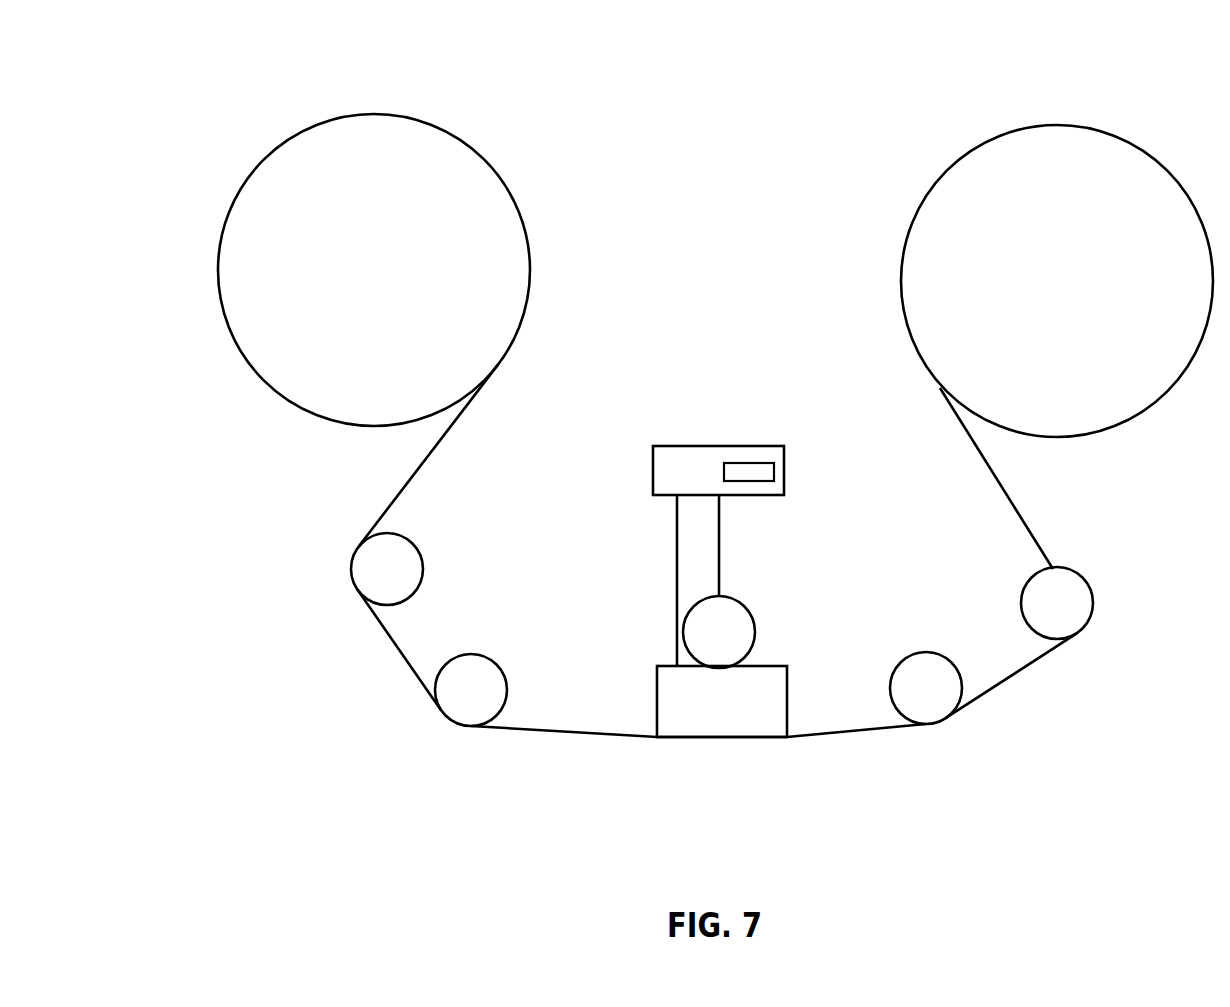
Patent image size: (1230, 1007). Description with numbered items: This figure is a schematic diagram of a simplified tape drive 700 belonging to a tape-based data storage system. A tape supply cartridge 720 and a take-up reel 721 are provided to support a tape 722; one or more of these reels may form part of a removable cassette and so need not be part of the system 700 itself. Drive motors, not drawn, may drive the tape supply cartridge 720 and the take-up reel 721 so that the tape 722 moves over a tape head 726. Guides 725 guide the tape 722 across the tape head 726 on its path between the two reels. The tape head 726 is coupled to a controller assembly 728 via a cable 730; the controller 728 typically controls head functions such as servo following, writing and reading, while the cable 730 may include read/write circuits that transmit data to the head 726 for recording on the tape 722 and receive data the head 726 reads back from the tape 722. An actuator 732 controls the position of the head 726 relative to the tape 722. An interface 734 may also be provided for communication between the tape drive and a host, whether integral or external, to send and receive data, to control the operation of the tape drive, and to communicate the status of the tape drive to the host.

The tape drive 700 is at (341, 497).
The tape supply cartridge 720 is at (528, 236).
The take-up reel 721 is at (1157, 403).
The tape 722 is at (570, 733).
The guides 725 is at (470, 652).
The tape head 726 is at (787, 703).
The controller assembly 728 is at (718, 446).
The cable 730 is at (677, 628).
The actuator 732 is at (745, 606).
The interface 734 is at (764, 463).